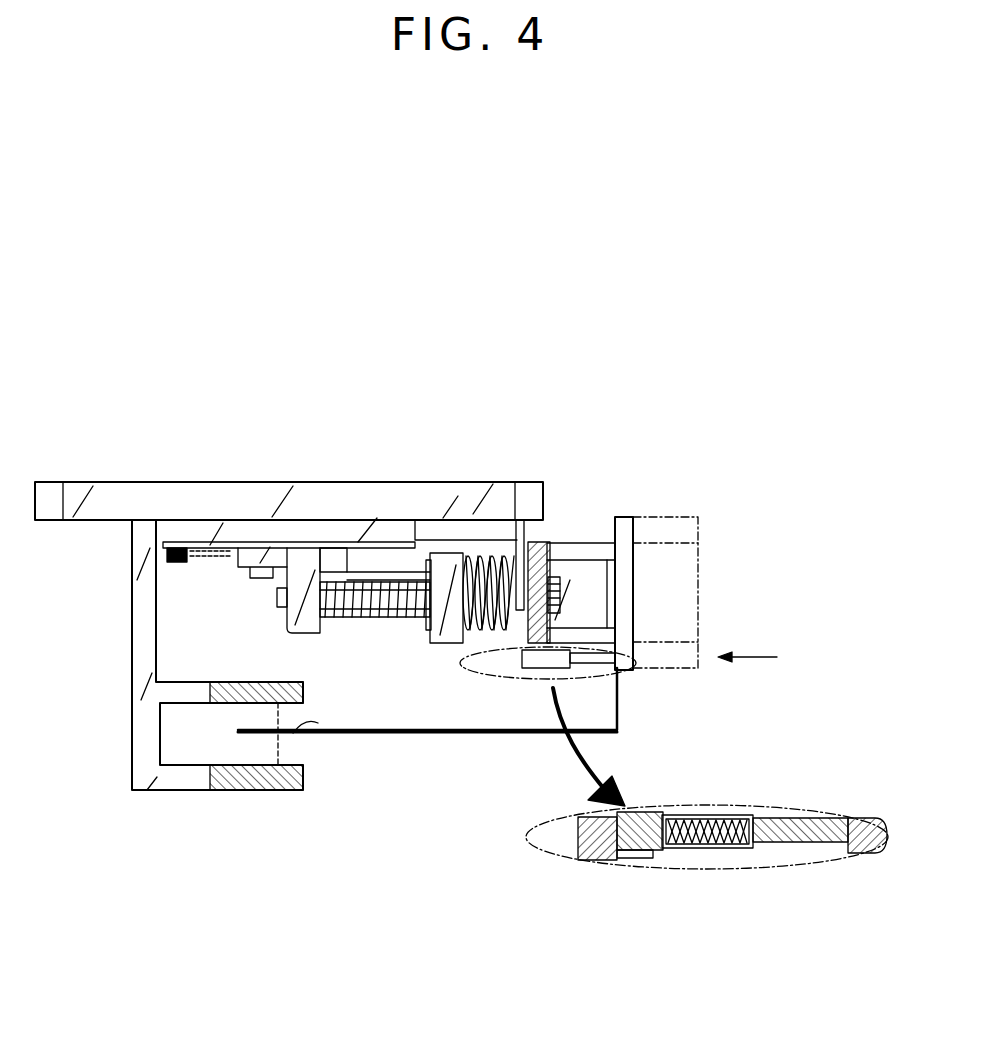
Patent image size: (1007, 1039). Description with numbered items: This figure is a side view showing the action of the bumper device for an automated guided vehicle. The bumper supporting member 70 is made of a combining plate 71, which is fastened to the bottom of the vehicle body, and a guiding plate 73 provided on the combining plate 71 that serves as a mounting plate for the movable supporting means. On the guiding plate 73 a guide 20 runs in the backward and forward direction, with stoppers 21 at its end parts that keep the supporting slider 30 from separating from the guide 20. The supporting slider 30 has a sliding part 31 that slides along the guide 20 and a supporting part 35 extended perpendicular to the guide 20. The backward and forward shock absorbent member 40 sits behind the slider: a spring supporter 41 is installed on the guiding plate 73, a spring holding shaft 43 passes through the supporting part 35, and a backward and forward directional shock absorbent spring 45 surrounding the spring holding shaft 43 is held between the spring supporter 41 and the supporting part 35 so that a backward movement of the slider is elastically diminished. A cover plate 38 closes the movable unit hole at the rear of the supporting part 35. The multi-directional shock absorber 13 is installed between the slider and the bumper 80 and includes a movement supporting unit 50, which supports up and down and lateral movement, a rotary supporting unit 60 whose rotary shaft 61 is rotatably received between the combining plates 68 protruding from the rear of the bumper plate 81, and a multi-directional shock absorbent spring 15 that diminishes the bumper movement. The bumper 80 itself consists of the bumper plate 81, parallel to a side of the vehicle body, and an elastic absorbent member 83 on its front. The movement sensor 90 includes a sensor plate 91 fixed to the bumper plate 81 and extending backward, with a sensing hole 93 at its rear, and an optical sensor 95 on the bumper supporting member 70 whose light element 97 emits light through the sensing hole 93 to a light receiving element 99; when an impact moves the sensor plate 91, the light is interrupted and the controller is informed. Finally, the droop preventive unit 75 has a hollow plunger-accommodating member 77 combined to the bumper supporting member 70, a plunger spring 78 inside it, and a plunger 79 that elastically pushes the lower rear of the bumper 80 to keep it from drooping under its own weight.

The bumper supporting member 70 is at (289, 451).
The combining plate 71 is at (112, 482).
The guiding plate 73 is at (185, 528).
The guide 20 is at (208, 562).
The stopper 21 is at (167, 552).
The supporting slider 30 is at (338, 493).
The sliding part 31 is at (358, 552).
The supporting part 35 is at (443, 560).
The multi-directional shock absorber 13 is at (517, 499).
The multi-directional shock absorbent spring 15 is at (477, 555).
The movement supporting unit 50 is at (516, 560).
The rotary supporting unit 60 is at (668, 522).
The rotary shaft 61 is at (607, 598).
The combining plate 68 is at (607, 553).
The bumper 80 is at (663, 511).
The bumper plate 81 is at (617, 517).
The elastic absorbent member 83 is at (680, 517).
The backward and forward shock absorbent member 40 is at (372, 727).
The spring supporter 41 is at (312, 633).
The spring holding shaft 43 is at (353, 617).
The backward and forward directional shock absorbent spring 45 is at (387, 617).
The cover plate 38 is at (425, 627).
The droop preventive unit 75 is at (707, 901).
The plunger-accommodating member 77 is at (672, 850).
The plunger spring 78 is at (723, 847).
The plunger 79 is at (795, 842).
The movement sensor 90 is at (396, 819).
The sensor plate 91 is at (335, 735).
The sensing hole 93 is at (316, 725).
The optical sensor 95 is at (239, 794).
The light element 97 is at (212, 790).
The light receiving element 99 is at (277, 767).